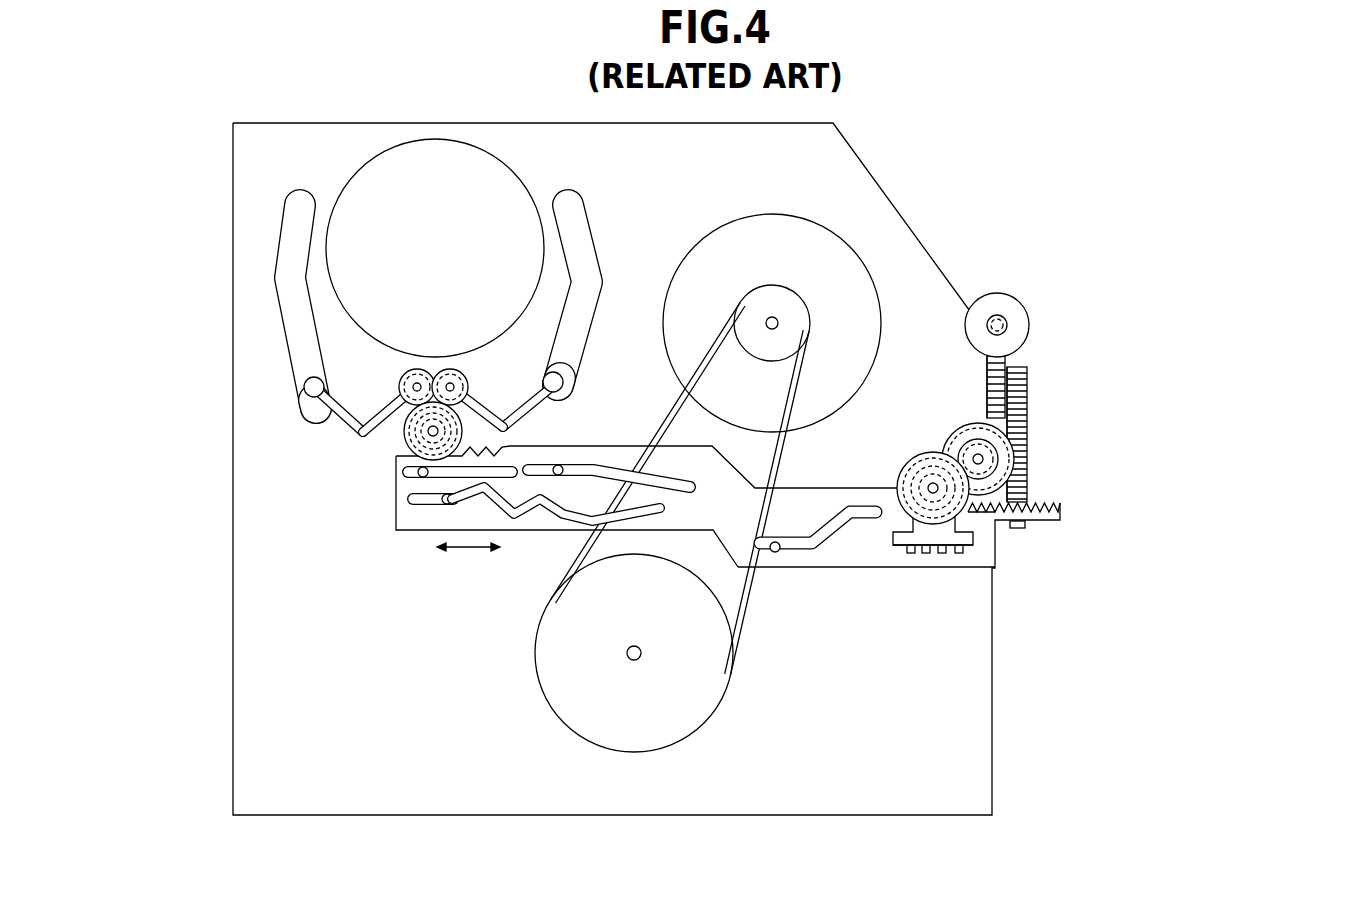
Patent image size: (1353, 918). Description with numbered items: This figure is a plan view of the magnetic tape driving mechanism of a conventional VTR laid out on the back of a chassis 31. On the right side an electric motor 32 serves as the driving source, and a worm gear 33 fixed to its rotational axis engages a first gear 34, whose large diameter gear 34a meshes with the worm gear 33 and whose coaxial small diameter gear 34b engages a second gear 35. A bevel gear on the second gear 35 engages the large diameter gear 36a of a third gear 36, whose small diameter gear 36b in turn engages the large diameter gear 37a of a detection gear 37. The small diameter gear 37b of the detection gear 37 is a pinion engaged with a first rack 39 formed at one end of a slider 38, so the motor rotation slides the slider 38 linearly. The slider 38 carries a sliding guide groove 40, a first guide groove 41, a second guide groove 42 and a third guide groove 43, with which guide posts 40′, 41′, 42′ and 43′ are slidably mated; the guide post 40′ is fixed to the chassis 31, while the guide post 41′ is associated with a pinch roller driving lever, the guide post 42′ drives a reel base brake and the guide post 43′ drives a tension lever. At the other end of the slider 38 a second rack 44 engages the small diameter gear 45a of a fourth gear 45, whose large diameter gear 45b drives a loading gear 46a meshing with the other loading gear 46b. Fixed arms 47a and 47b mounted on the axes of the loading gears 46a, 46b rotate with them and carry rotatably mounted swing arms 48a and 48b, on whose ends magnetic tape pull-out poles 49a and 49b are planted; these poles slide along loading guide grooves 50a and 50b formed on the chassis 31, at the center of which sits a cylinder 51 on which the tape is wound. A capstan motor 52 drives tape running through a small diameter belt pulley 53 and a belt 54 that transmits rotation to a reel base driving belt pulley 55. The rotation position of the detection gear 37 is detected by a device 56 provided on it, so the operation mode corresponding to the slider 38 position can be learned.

The chassis 31 is at (833, 152).
The electric motor 32 is at (986, 306).
The worm gear 33 is at (1003, 313).
The first gear 34 is at (987, 365).
The large diameter gear 34a is at (1010, 342).
The small diameter gear 34b is at (1026, 368).
The second gear 35 is at (1028, 425).
The third gear 36 is at (968, 430).
The large diameter gear 36a is at (953, 430).
The small diameter gear 36b is at (957, 445).
The detection gear 37 is at (930, 515).
The large diameter gear 37a is at (906, 462).
The small diameter gear 37b is at (897, 487).
The slider 38 is at (867, 563).
The first rack 39 is at (1038, 503).
The sliding guide groove 40 is at (418, 448).
The guide post 40′ is at (422, 478).
The first guide groove 41 is at (828, 538).
The guide post 41′ is at (776, 550).
The second guide groove 42 is at (607, 478).
The guide post 42′ is at (565, 462).
The third guide groove 43 is at (533, 510).
The guide post 43′ is at (446, 505).
The second rack 44 is at (508, 438).
The fourth gear 45 is at (412, 446).
The small diameter gear 45a is at (413, 477).
The large diameter gear 45b is at (408, 420).
The loading gear 46a is at (405, 372).
The loading gear 46b is at (455, 372).
The fixed arm 47a is at (360, 410).
The fixed arm 47b is at (495, 412).
The swing arm 48a is at (318, 405).
The swing arm 48b is at (556, 398).
The magnetic tape pull-out pole 49a is at (304, 386).
The magnetic tape pull-out pole 49b is at (560, 374).
The loading guide groove 50a is at (290, 290).
The loading guide groove 50b is at (580, 212).
The cylinder 51 is at (512, 192).
The capstan motor 52 is at (753, 228).
The small diameter belt pulley 53 is at (783, 287).
The belt 54 is at (800, 376).
The reel base driving belt pulley 55 is at (724, 696).
The device 56 is at (965, 535).